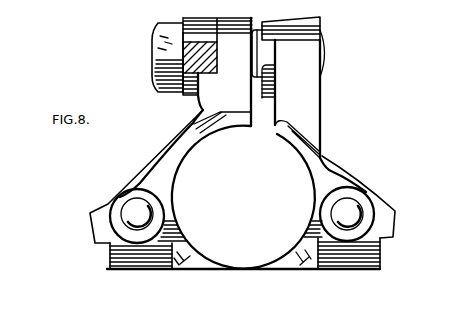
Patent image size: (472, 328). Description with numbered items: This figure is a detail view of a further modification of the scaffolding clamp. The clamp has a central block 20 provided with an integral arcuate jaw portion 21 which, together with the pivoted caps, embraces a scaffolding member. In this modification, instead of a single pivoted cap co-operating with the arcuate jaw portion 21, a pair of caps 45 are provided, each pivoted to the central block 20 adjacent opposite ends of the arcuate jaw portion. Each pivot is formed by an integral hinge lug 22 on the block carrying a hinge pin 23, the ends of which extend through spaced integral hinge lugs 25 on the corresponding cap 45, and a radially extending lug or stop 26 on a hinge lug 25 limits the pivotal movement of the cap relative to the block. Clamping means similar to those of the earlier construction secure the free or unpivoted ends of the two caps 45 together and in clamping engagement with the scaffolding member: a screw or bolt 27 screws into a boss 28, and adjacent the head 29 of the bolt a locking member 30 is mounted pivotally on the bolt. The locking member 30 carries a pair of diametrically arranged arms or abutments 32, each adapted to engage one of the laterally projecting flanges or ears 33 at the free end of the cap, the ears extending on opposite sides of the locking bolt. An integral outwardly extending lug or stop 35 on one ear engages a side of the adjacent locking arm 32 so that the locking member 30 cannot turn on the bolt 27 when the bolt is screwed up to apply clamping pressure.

The central block 20 is at (288, 260).
The arcuate jaw portion 21 is at (207, 252).
The hinge lug 22 is at (140, 247).
The hinge pin 23 is at (133, 209).
The hinge lugs 25 is at (120, 205).
The lug or stop 26 is at (102, 220).
The screw or bolt 27 is at (265, 55).
The boss 28 is at (320, 35).
The head 29 is at (163, 47).
The locking member 30 is at (190, 98).
The arm or abutment 32 is at (205, 57).
The flange or ear 33 is at (238, 30).
The lug or stop 35 is at (212, 78).
The cap 45 is at (175, 152).